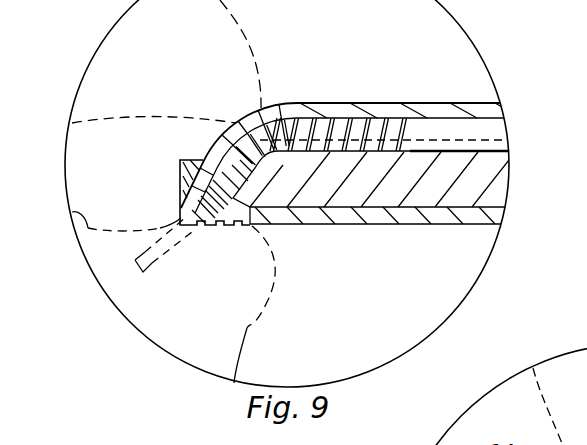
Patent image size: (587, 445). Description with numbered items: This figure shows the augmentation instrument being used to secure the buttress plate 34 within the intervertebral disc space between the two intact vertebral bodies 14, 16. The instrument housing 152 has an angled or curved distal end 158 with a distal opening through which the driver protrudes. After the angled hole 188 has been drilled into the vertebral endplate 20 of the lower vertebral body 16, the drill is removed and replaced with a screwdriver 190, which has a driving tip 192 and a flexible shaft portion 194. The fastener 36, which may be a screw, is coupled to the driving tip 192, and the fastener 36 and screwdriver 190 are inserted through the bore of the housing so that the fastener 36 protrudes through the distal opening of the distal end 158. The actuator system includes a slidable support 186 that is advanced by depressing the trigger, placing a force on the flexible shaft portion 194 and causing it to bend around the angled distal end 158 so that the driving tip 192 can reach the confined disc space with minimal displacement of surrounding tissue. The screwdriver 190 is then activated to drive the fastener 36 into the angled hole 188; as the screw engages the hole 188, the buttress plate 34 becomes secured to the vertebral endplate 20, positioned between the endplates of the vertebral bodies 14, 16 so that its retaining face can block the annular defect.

The vertebral body 14 is at (168, 48).
The vertebral body 16 is at (244, 277).
The vertebral endplate 20 is at (72, 212).
The buttress plate 34 is at (181, 183).
The fastener 36 is at (182, 200).
The instrument housing 152 is at (403, 102).
The distal end 158 is at (310, 103).
The slidable support 186 is at (497, 188).
The angled hole 188 is at (150, 261).
The screwdriver 190 is at (455, 132).
The driving tip 192 is at (205, 158).
The flexible shaft portion 194 is at (347, 123).